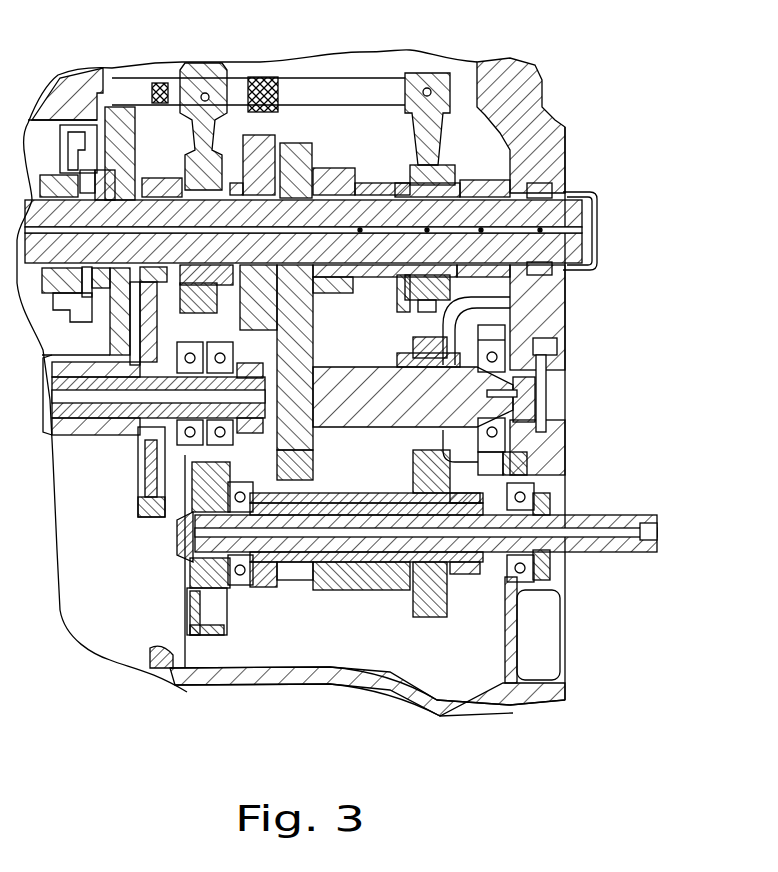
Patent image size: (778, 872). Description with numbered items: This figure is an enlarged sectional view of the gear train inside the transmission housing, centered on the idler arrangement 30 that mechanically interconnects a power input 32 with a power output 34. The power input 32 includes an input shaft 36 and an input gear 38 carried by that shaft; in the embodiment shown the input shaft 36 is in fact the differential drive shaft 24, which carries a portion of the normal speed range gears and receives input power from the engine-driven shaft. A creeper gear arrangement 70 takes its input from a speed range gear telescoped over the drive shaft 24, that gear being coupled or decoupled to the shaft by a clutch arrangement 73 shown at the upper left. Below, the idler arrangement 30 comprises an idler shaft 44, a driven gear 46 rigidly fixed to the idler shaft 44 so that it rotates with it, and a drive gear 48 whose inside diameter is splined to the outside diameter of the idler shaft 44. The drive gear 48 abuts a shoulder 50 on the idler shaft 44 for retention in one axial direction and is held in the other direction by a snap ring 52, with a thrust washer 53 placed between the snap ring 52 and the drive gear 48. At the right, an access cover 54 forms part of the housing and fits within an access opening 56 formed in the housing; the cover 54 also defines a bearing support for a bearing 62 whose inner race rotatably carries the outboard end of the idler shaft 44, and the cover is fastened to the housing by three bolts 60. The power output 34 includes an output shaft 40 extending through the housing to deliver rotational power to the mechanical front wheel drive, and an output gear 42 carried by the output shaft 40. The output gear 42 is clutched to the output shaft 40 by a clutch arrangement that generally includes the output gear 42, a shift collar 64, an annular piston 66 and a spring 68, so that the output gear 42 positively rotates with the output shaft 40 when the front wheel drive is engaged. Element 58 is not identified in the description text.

The clutch arrangement 73 is at (228, 138).
The input gear 38 is at (300, 148).
The differential drive shaft 24 is at (362, 231).
The input shaft 36 is at (593, 216).
The drive gear 48 is at (465, 362).
The snap ring 52 is at (527, 308).
The access opening 56 is at (533, 330).
The bolts 60 is at (557, 352).
The idler arrangement 30 is at (594, 398).
The access cover 54 is at (545, 425).
The retainer 58 is at (560, 447).
The thrust washer 53 is at (530, 466).
The output shaft 40 is at (637, 513).
The power input 32 is at (365, 300).
The idler shaft 44 is at (338, 372).
The driven gear 46 is at (285, 478).
The shoulder 50 is at (385, 490).
The creeper gear arrangement 70 is at (108, 457).
The spring 68 is at (265, 575).
The shift collar 64 is at (317, 580).
The annular piston 66 is at (362, 588).
The power output 34 is at (366, 579).
The bearing / clutch arrangement 62 is at (393, 598).
The output gear 42 is at (432, 618).